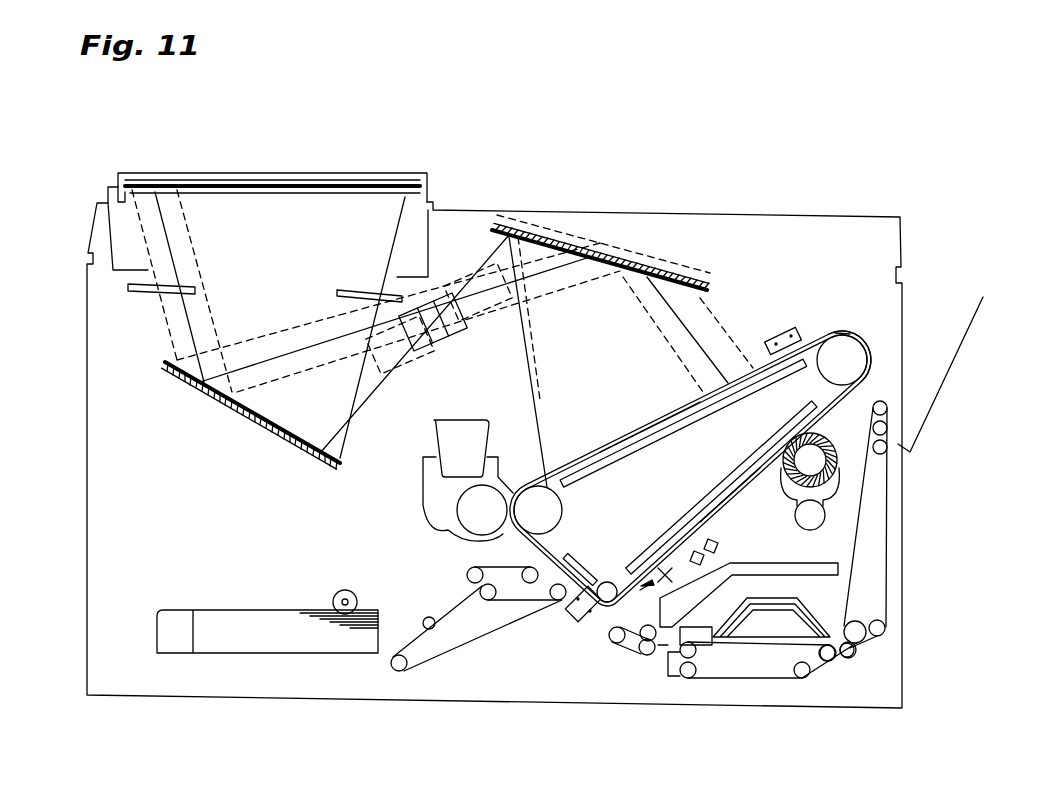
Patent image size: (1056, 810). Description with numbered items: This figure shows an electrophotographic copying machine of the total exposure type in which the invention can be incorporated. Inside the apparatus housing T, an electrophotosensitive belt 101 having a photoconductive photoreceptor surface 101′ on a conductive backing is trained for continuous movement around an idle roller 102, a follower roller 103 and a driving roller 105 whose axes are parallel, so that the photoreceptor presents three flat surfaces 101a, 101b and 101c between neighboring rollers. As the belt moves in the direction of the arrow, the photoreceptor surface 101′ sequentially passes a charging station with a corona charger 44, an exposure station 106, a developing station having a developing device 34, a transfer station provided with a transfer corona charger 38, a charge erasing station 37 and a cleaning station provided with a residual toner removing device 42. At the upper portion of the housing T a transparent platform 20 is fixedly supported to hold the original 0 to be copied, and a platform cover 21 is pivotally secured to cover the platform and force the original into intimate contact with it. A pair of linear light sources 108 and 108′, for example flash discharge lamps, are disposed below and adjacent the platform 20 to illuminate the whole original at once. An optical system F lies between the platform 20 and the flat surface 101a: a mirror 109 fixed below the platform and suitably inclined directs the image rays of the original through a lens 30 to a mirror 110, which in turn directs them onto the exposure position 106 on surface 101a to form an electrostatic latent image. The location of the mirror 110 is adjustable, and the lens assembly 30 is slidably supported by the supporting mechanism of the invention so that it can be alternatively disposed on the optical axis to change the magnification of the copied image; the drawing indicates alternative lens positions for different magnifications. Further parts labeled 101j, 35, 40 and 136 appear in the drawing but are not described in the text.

The original 0 is at (204, 186).
The platform cover 21 is at (282, 182).
The transparent platform 20 is at (382, 185).
The linear light source 108 is at (182, 288).
The linear light source 108′ is at (352, 290).
The optical system F is at (453, 248).
The mirror 110 is at (540, 240).
The mirror 109 is at (233, 408).
The lens assembly 30 is at (353, 480).
The apparatus housing T is at (88, 325).
The electrophotosensitive belt 101 is at (862, 345).
The photoreceptor surface 101′ is at (850, 335).
The exposure position of belt 101j is at (840, 332).
The flat surface 101a is at (652, 420).
The flat surface 101b is at (560, 598).
The flat surface 101c is at (746, 492).
The idle roller 102 is at (843, 360).
The follower roller 103 is at (548, 502).
The driving roller 105 is at (607, 585).
The exposure station 106 is at (593, 447).
The corona charger 44 is at (780, 330).
The residual toner removing device 42 is at (812, 460).
The charge erasing station 37 is at (705, 558).
The developing device 34 is at (427, 510).
The transfer corona charger 38 is at (580, 613).
The feed rollers 40 is at (625, 645).
The paper cassette 35 is at (283, 645).
The conveyor belt 136 is at (760, 665).